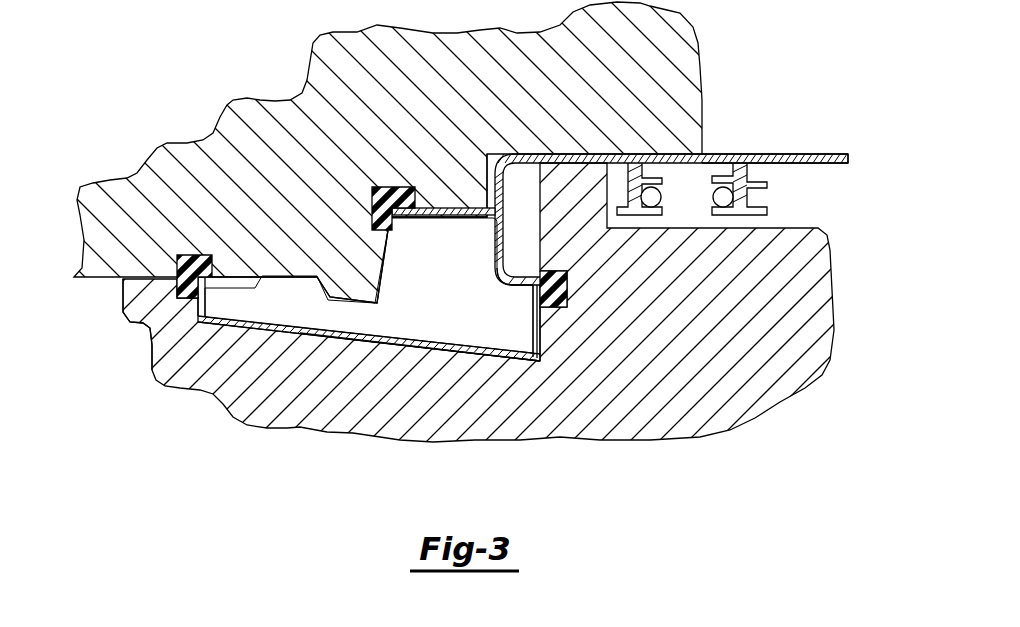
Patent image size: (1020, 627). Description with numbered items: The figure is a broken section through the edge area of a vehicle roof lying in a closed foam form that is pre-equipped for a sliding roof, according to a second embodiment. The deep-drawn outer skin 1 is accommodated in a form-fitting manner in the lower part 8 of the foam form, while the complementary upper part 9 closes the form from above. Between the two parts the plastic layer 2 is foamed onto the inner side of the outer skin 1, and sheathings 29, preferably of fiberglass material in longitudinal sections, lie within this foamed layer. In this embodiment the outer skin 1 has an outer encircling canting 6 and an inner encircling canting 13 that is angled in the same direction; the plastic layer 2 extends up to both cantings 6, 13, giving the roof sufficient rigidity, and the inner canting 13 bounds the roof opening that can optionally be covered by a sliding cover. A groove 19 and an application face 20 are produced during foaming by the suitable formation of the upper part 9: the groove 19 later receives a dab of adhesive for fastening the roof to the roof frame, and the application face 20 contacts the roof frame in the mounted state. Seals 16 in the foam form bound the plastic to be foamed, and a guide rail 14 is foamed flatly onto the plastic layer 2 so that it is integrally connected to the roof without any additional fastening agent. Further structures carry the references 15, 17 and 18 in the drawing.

The outer skin 1 is at (362, 341).
The plastic layer 2 is at (240, 307).
The outer encircling canting 6 is at (197, 334).
The lower part 8 is at (243, 412).
The upper part 9 is at (87, 223).
The inner encircling canting 13 is at (540, 340).
The guide rail 14 is at (747, 158).
The sheet metal channel 15 is at (570, 156).
The seal 16 is at (372, 192).
The lower face of cover 17 is at (440, 210).
The channel bottom bend 18 is at (524, 288).
The groove 19 is at (233, 283).
The application face 20 is at (298, 262).
The sheathing 29 is at (410, 346).